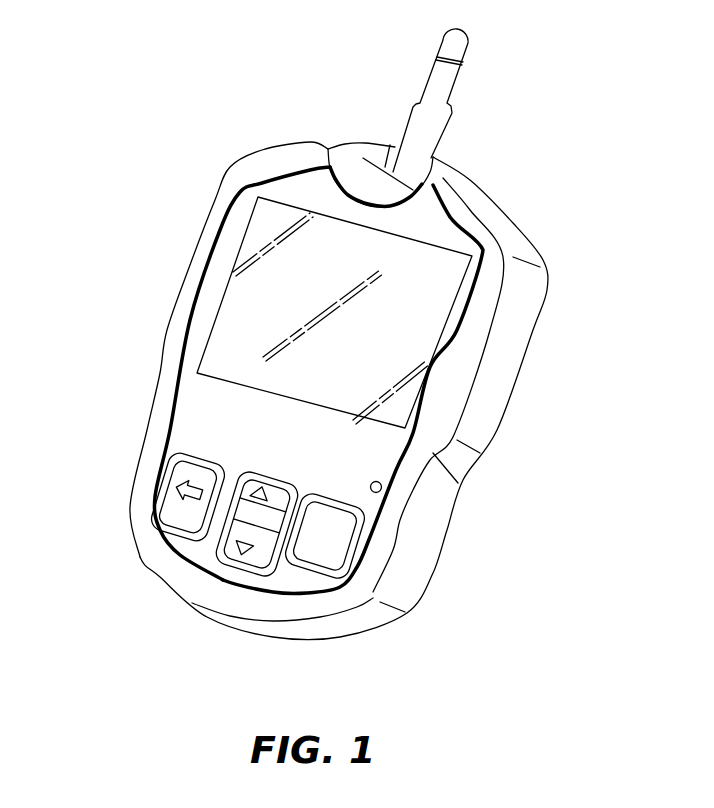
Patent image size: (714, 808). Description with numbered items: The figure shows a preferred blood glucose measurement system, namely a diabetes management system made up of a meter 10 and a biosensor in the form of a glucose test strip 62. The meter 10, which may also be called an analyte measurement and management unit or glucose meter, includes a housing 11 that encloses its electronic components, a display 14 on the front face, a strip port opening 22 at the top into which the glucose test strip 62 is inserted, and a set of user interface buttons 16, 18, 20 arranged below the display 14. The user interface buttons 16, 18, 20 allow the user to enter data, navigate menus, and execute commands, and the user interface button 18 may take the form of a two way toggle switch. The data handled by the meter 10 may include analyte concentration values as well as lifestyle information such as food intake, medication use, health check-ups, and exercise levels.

The meter 10 is at (483, 240).
The housing 11 is at (370, 456).
The display 14 is at (430, 370).
The user interface button 16 is at (345, 521).
The user interface button 18 is at (267, 537).
The user interface button 20 is at (187, 515).
The strip port opening 22 is at (366, 157).
The glucose test strip 62 is at (437, 89).